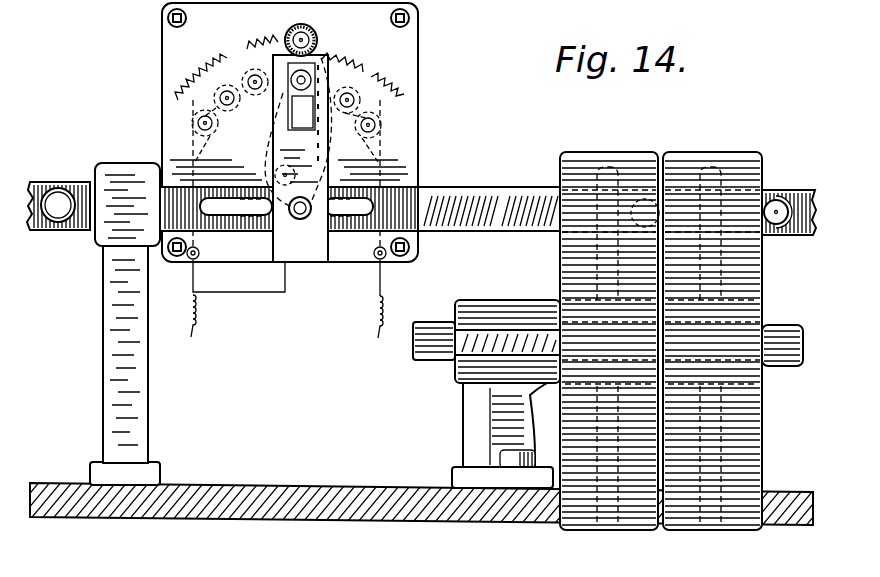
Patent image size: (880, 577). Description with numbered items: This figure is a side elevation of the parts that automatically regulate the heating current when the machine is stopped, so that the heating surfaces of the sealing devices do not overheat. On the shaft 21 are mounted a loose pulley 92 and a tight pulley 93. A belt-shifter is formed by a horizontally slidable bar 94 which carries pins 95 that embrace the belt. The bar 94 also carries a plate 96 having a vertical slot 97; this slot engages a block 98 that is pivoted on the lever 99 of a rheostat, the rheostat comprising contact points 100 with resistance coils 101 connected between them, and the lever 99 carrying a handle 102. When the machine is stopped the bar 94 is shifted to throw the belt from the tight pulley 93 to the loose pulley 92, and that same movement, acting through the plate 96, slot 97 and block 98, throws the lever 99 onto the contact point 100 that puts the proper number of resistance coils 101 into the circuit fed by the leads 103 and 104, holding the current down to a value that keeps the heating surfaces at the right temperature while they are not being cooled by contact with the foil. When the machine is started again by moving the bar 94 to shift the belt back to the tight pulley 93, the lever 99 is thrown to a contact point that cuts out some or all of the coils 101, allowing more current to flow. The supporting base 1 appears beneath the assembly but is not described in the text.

The base 1 is at (247, 505).
The shaft 21 is at (437, 362).
The loose pulley 92 is at (700, 151).
The tight pulley 93 is at (595, 151).
The horizontally slidable bar 94 is at (478, 200).
The pins 95 is at (777, 222).
The plate 96 is at (316, 176).
The vertical slot 97 is at (298, 118).
The block 98 is at (302, 94).
The lever 99 is at (276, 175).
The contact points 100 is at (343, 137).
The resistance coils 101 is at (373, 90).
The handle 102 is at (318, 35).
The lead 103 is at (197, 318).
The lead 104 is at (378, 320).